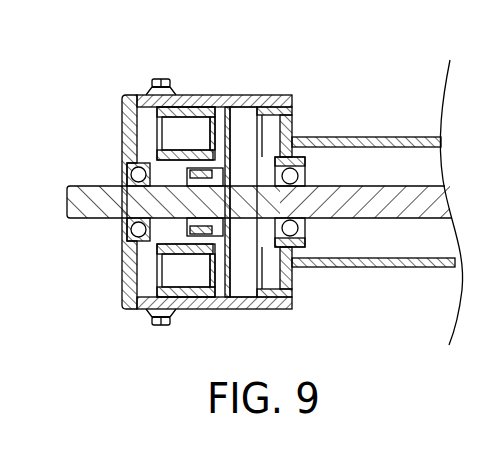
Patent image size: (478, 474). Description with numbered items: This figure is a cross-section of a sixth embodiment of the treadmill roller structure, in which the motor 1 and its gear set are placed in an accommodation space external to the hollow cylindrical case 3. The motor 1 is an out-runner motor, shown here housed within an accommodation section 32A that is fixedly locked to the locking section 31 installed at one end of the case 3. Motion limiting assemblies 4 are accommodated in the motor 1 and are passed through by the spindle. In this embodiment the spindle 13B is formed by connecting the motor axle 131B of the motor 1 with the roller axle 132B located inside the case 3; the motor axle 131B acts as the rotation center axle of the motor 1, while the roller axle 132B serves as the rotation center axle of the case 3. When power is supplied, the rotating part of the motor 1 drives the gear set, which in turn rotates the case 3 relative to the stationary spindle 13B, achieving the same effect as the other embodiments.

The motor 1 is at (189, 97).
The accommodation section 32A is at (242, 94).
The locking section 31 is at (291, 94).
The spindle 13B is at (344, 122).
The motor axle 131B is at (238, 197).
The roller axle 132B is at (405, 203).
The motion limiting assemblies 4 is at (126, 172).
The case 3 is at (405, 269).